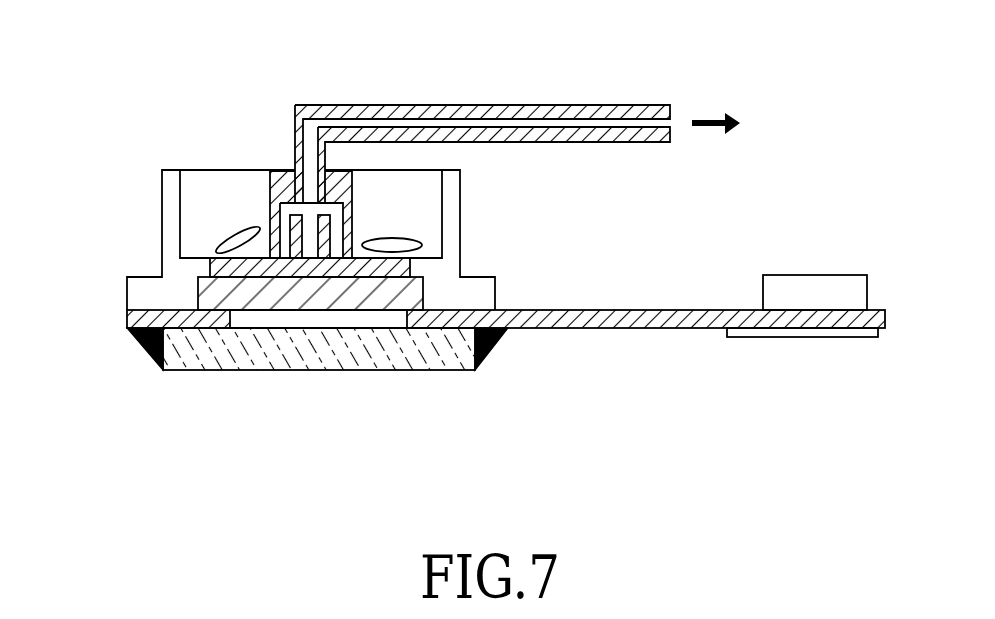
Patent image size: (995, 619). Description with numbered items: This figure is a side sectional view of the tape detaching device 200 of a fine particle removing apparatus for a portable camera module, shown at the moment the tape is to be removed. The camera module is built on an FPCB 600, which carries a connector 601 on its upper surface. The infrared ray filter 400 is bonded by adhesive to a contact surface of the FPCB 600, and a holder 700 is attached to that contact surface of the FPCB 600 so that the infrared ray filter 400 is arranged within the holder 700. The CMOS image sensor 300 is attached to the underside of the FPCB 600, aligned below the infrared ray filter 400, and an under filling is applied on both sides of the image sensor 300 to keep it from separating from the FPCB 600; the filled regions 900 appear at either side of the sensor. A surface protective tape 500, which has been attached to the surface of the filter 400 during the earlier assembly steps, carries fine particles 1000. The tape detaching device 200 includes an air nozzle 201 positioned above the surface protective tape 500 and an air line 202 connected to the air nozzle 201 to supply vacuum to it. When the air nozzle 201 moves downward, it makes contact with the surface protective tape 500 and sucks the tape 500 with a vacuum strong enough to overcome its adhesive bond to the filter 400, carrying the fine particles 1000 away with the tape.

The tape detaching device 200 is at (482, 105).
The air nozzle 201 is at (283, 215).
The air line 202 is at (372, 106).
The CMOS image sensor 300 is at (237, 362).
The infrared ray filter 400 is at (363, 302).
The surface protective tape 500 is at (305, 262).
The FPCB 600 is at (675, 322).
The connector 601 is at (808, 282).
The holder 700 is at (475, 278).
The fillet 900 is at (140, 347).
The fine particles 1000 is at (220, 238).